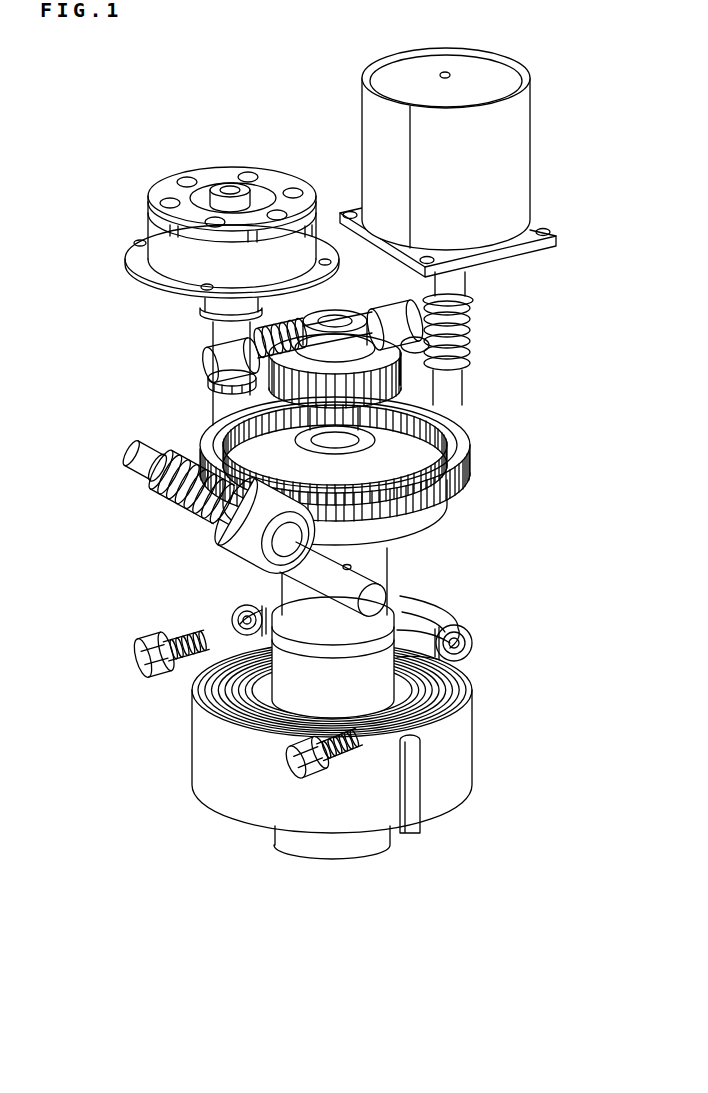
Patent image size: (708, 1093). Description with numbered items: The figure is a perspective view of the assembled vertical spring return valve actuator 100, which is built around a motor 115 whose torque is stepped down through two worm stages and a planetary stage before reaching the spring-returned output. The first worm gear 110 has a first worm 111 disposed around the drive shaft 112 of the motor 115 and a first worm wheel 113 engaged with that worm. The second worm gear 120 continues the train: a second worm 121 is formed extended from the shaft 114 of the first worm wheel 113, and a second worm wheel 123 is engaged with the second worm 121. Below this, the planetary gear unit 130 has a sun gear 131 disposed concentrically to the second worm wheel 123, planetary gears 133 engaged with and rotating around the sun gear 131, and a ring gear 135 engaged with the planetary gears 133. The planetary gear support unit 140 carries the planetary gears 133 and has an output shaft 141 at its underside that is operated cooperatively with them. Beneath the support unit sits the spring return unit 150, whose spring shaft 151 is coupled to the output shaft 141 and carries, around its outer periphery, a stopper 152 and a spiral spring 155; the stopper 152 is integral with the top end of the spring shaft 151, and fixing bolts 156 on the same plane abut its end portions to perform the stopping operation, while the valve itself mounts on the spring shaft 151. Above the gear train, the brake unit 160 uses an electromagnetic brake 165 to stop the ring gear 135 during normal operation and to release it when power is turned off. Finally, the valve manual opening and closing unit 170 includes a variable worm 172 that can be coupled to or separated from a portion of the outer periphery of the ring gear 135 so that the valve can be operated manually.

The vertical spring return valve actuator 100 is at (585, 132).
The first worm gear 110 is at (597, 298).
The first worm 111 is at (477, 325).
The drive shaft 112 is at (467, 280).
The first worm wheel 113 is at (432, 287).
The shaft 114 is at (393, 303).
The motor 115 is at (375, 121).
The second worm gear 120 is at (90, 345).
The second worm 121 is at (233, 334).
The second worm wheel 123 is at (215, 392).
The planetary gear unit 130 is at (597, 440).
The sun gear 131 is at (467, 441).
The planetary gears 133 is at (468, 466).
The ring gear 135 is at (463, 487).
The planetary gear support unit 140 is at (390, 537).
The output shaft 141 is at (385, 568).
The spring return unit 150 is at (455, 853).
The spring shaft 151 is at (321, 853).
The stopper 152 is at (472, 644).
The spiral spring 155 is at (448, 768).
The fixing bolts 156 is at (136, 655).
The brake unit 160 is at (207, 156).
The electromagnetic brake 165 is at (167, 187).
The valve manual opening and closing unit 170 is at (181, 555).
The variable worm 172 is at (153, 497).